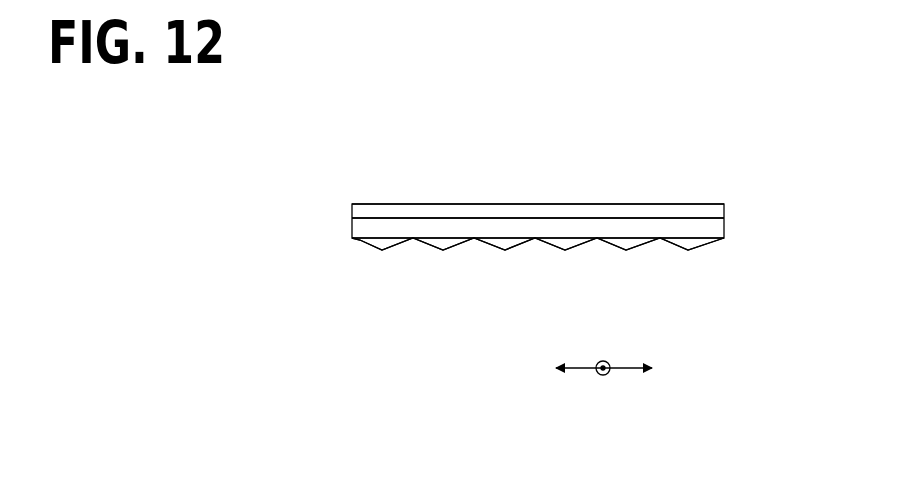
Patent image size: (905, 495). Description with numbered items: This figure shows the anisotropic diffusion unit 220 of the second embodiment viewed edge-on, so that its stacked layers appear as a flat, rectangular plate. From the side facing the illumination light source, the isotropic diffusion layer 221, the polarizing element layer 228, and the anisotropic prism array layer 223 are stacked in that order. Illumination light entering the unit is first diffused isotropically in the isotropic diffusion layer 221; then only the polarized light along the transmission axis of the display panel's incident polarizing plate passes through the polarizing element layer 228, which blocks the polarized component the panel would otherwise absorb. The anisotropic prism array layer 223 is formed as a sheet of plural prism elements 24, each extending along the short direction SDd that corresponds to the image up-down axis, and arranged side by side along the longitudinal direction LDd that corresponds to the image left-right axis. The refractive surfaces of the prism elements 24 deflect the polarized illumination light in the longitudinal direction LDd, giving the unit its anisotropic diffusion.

The anisotropic diffusion unit 220 is at (356, 157).
The isotropic diffusion layer 221 is at (351, 207).
The polarizing element layer 228 is at (352, 224).
The anisotropic prism array layer 223 is at (366, 247).
The prism element 24 is at (374, 252).
The longitudinal direction LDd is at (581, 369).
The short direction SDd is at (604, 376).